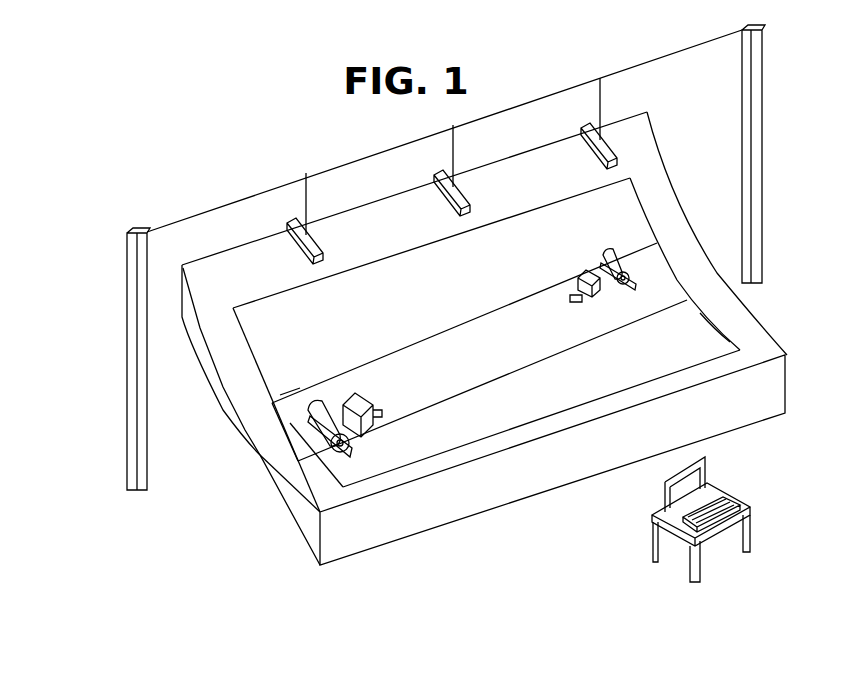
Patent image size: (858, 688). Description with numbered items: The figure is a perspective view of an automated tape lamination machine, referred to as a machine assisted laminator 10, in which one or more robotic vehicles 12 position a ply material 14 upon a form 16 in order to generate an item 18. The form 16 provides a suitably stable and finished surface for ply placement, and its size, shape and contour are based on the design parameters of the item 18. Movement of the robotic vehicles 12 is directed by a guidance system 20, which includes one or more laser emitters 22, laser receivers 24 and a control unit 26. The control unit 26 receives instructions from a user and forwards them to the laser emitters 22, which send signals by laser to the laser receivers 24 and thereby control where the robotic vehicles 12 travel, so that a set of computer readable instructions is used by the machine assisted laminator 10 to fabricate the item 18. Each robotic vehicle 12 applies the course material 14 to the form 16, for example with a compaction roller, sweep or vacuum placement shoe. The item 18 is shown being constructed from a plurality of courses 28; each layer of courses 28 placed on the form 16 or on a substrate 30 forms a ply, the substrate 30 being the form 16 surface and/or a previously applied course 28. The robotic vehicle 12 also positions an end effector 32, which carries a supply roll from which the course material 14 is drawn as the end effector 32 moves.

The machine assisted laminator 10 is at (786, 132).
The robotic vehicle 12 is at (355, 440).
The ply material 14 is at (335, 398).
The form 16 is at (762, 393).
The item 18 is at (723, 330).
The guidance system 20 is at (107, 232).
The laser emitter 22 is at (458, 187).
The laser receiver 24 is at (382, 416).
The control unit 26 is at (735, 490).
The course 28 is at (306, 436).
The substrate 30 is at (287, 420).
The end effector 32 is at (338, 467).